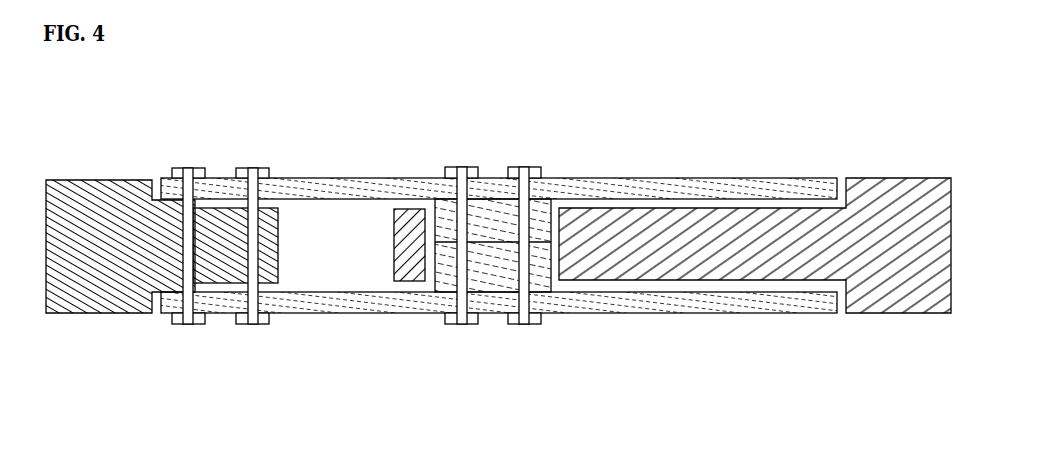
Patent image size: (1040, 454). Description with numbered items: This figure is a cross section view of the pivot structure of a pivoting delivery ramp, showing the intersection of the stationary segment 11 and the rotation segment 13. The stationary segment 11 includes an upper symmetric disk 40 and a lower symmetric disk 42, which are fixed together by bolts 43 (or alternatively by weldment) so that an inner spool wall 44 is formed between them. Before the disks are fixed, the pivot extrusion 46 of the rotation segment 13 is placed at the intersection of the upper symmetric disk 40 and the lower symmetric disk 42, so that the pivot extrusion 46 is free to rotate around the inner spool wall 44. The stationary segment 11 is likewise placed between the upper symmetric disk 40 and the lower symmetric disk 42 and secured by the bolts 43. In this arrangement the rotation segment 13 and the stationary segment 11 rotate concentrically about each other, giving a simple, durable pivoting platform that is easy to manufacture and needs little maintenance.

The stationary segment 11 is at (115, 188).
The rotation segment 13 is at (917, 186).
The upper symmetric disk 40 is at (699, 187).
The lower symmetric disk 42 is at (663, 300).
The bolts 43 is at (193, 170).
The inner spool wall 44 is at (439, 232).
The pivot extrusion 46 is at (633, 252).